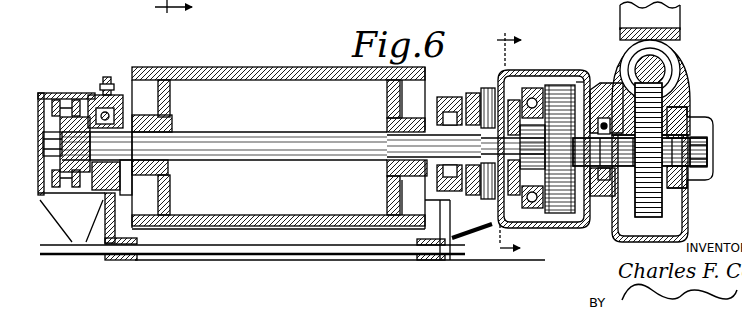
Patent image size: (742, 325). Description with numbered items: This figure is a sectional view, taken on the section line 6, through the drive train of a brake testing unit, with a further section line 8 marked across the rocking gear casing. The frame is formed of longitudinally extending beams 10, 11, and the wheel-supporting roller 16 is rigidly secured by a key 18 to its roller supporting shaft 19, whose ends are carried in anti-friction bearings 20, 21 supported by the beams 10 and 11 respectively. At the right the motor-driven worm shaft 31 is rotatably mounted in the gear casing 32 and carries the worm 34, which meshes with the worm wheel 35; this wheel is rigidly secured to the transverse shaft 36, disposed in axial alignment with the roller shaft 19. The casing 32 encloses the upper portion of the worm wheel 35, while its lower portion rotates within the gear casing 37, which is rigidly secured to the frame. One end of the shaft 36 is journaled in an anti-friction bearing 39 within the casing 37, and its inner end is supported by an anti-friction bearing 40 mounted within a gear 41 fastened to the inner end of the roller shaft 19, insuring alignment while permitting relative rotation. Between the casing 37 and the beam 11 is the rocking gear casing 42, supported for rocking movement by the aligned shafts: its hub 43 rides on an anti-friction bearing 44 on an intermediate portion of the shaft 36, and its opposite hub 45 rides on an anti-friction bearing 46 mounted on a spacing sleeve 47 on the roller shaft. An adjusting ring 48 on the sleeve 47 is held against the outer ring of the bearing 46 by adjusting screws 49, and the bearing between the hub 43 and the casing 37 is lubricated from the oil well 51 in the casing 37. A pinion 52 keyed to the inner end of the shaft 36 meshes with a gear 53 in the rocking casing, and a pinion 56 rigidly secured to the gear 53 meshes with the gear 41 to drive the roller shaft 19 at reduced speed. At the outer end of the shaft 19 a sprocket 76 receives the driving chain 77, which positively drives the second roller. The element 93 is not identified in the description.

The section line 6 is at (173, 14).
The section line 8 is at (505, 140).
The longitudinally extending beam 10 is at (110, 213).
The longitudinally extending beam 11 is at (450, 246).
The roller 16 is at (290, 70).
The key 18 is at (392, 116).
The roller supporting shaft 19 is at (266, 132).
The anti-friction bearing 20 is at (96, 100).
The anti-friction bearing 21 is at (452, 104).
The worm shaft 31 is at (661, 72).
The gear casing 32 is at (673, 47).
The worm 34 is at (665, 62).
The worm wheel 35 is at (645, 217).
The shaft 36 is at (613, 208).
The gear casing 37 is at (672, 238).
The anti-friction bearing 39 is at (694, 117).
The anti-friction bearing 40 is at (549, 168).
The gear 41 is at (532, 196).
The rocking gear casing 42 is at (562, 92).
The hub 43 is at (598, 182).
The anti-friction bearing 44 is at (603, 108).
The hub 45 is at (486, 205).
The anti-friction bearing 46 is at (489, 90).
The spacing sleeve 47 is at (583, 152).
The adjusting ring 48 is at (466, 140).
The adjusting screws 49 is at (480, 95).
The oil well 51 is at (603, 118).
The pinion 52 is at (530, 92).
The gear 53 is at (574, 100).
The pinion 56 is at (430, 178).
The sprocket 76 is at (60, 210).
The driving chain 77 is at (80, 182).
The lever 93 is at (76, 6).